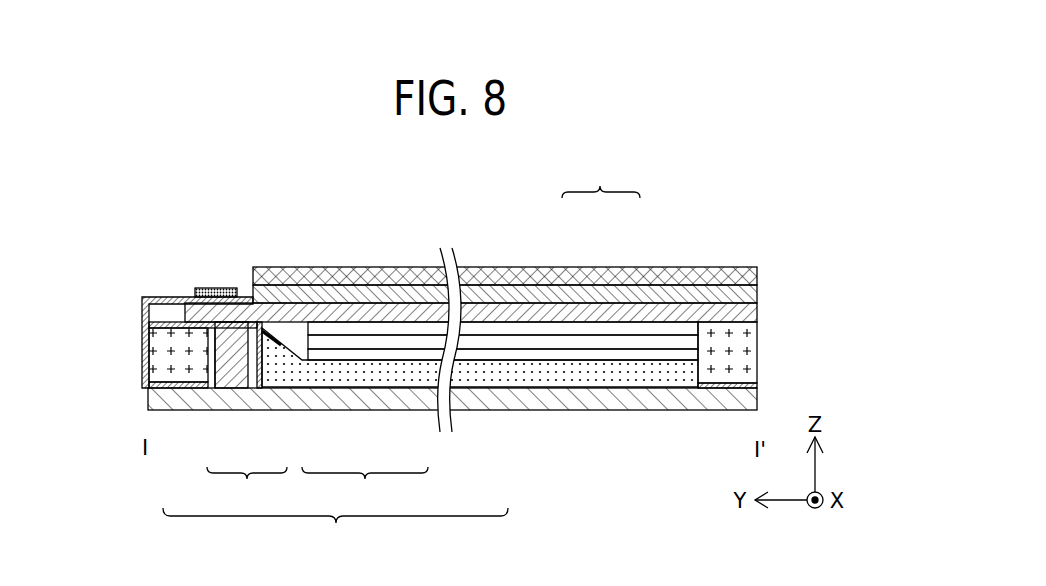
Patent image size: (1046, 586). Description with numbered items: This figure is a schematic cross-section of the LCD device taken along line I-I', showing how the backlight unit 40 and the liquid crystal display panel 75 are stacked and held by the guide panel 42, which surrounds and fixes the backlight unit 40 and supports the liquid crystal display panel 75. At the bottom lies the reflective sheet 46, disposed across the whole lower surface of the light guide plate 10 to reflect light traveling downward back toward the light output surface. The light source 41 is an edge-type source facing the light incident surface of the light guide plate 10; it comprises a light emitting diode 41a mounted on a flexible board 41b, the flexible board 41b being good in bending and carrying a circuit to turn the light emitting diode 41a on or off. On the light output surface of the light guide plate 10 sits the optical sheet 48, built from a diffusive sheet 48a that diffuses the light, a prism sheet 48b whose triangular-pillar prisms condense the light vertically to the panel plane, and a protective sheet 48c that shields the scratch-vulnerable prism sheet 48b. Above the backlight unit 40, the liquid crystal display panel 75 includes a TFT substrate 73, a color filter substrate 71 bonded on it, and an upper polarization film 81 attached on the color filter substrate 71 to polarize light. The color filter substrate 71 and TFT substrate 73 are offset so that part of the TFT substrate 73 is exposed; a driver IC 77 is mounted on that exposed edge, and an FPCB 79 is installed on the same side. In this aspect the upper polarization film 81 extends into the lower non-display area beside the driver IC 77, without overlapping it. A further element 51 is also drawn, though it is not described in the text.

The light guide plate 10 is at (634, 373).
The backlight unit 40 is at (335, 526).
The light source 41 is at (246, 414).
The light emitting diode 41a is at (232, 373).
The flexible board 41b is at (276, 343).
The guide panel 42 is at (176, 357).
The reflective sheet 46 is at (505, 395).
The optical sheet 48 is at (499, 413).
The diffusive sheet 48a is at (330, 351).
The prism sheet 48b is at (377, 337).
The protective sheet 48c is at (424, 326).
The sealing member 51 is at (722, 386).
The color filter substrate 71 is at (570, 296).
The TFT substrate 73 is at (620, 318).
The liquid crystal display panel 75 is at (601, 180).
The driver IC 77 is at (217, 287).
The FPCB 79 is at (148, 342).
The upper polarization film 81 is at (512, 280).